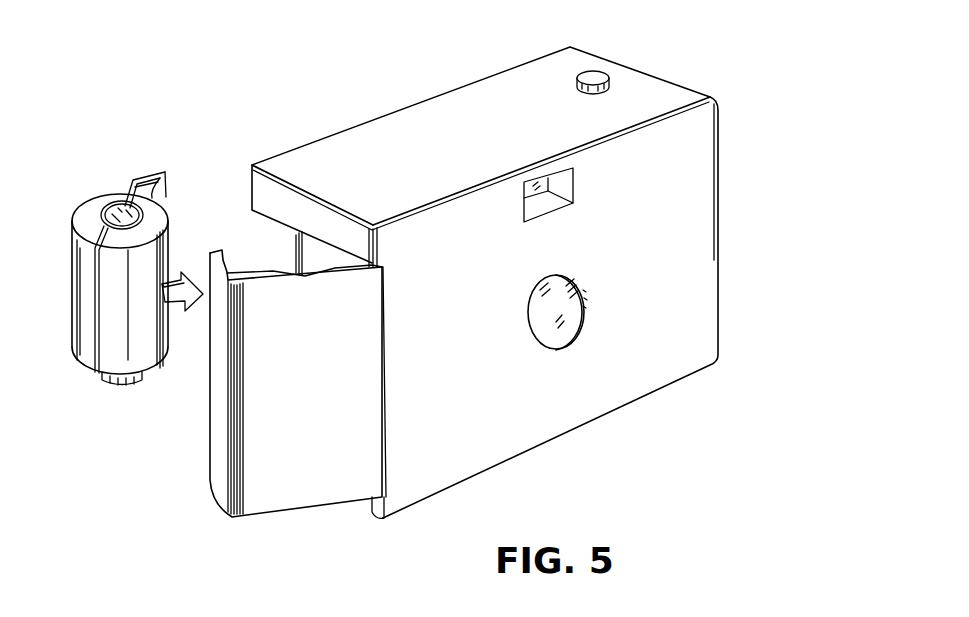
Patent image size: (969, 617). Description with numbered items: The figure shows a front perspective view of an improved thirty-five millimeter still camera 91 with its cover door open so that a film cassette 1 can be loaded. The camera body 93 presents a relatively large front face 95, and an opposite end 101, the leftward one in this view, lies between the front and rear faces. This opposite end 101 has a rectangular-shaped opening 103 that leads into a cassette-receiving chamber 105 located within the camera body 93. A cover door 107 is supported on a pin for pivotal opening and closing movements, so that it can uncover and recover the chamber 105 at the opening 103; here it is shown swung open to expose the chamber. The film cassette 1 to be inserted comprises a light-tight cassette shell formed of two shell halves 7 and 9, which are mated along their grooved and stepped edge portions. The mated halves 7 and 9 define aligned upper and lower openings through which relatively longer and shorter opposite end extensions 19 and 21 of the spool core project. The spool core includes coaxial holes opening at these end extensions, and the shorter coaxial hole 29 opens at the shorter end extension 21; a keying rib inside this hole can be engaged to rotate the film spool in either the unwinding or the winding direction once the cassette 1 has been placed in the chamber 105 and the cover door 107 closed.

The film cassette 1 is at (72, 362).
The cassette shell 7 is at (72, 283).
The film strip exit 9 is at (165, 345).
The spool end cap 19 is at (118, 386).
The film leader flap 21 is at (105, 210).
The spool opening 29 is at (120, 210).
The camera 91 is at (670, 70).
The camera body 93 is at (717, 363).
The front wall 95 is at (600, 393).
The cassette cover 101 is at (263, 199).
The cassette chamber 103 is at (330, 250).
The guide post 105 is at (327, 257).
The door panel 107 is at (270, 487).